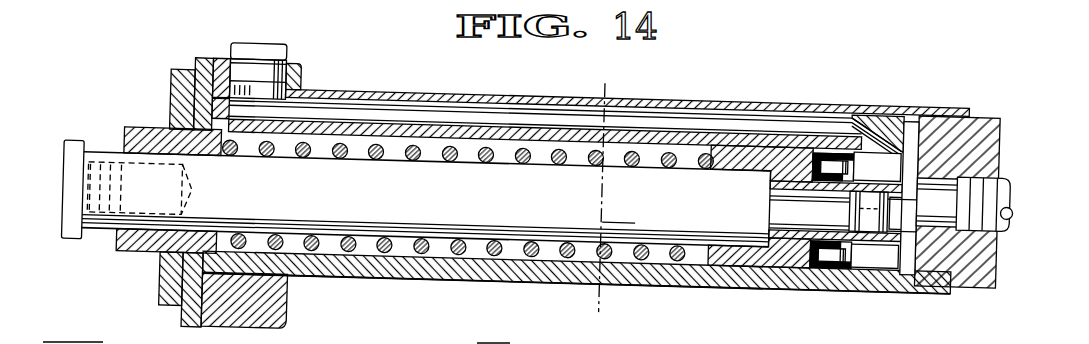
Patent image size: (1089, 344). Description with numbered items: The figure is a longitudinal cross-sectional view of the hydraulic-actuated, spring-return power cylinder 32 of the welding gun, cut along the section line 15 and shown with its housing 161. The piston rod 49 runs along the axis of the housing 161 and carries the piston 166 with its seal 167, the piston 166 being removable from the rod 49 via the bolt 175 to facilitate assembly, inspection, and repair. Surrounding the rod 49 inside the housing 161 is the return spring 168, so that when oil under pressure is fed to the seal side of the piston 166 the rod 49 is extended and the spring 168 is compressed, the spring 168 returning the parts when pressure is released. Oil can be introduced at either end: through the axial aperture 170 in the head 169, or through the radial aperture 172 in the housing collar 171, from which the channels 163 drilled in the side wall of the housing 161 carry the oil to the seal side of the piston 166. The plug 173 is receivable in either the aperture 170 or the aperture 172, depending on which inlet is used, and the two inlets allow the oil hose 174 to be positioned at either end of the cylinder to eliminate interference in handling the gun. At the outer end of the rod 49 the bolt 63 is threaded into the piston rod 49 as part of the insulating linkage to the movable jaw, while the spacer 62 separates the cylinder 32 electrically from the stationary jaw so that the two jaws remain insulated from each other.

The section line 15- 15 is at (602, 83).
The cylinder 32 is at (459, 289).
The piston rod 49 is at (107, 243).
The spacer 62 is at (142, 139).
The bolt 63 is at (75, 154).
The housing 161 is at (557, 273).
The channels 163 is at (482, 114).
The piston 166 is at (720, 165).
The seal 167 is at (853, 166).
The return spring 168 is at (549, 153).
The head 169 is at (980, 110).
The axial aperture 170 is at (987, 150).
The housing collar 171 is at (300, 95).
The radial aperture 172 is at (218, 68).
The plug 173 is at (258, 60).
The oil hose 174 is at (1009, 210).
The bolt 175 is at (857, 246).